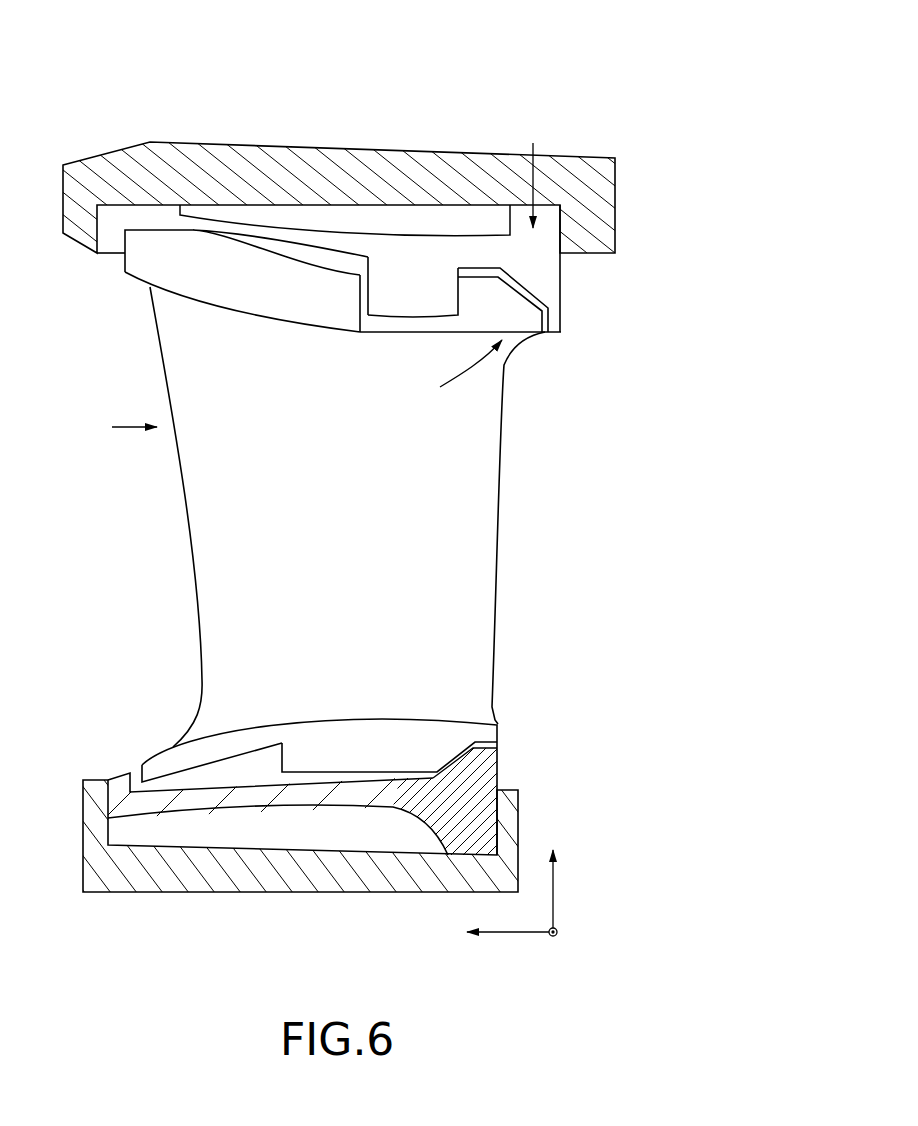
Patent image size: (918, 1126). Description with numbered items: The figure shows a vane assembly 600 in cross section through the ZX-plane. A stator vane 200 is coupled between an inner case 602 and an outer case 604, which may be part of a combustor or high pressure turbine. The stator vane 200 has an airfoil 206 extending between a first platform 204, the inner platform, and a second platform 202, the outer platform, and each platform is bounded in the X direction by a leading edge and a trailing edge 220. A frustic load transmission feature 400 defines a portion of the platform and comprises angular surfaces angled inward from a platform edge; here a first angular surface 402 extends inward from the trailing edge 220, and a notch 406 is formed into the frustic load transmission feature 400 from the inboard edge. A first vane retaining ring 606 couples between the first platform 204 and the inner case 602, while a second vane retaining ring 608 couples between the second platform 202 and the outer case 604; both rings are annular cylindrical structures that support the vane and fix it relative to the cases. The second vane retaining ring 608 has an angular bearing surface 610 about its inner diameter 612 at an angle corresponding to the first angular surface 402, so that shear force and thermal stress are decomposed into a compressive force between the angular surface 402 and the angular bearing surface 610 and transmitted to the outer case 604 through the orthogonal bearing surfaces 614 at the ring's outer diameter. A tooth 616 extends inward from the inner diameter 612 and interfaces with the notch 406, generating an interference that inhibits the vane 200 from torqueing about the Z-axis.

The vane assembly 600 is at (363, 488).
The outer case 604 is at (232, 182).
The inner case 602 is at (162, 877).
The second vane retaining ring 608 is at (150, 215).
The orthogonal bearing surfaces 614 is at (550, 213).
The stator vane 200 is at (317, 542).
The second platform 202 is at (115, 273).
The first platform 204 is at (147, 733).
The airfoil 206 is at (347, 551).
The trailing edge 220 is at (542, 343).
The frustic load transmission feature 400 is at (310, 297).
The first angular surface 402 is at (523, 297).
The notch 406 is at (363, 308).
The angular bearing surface 610 is at (515, 278).
The inner diameter 612 is at (263, 240).
The tooth 616 is at (403, 288).
The first vane retaining ring 606 is at (120, 778).